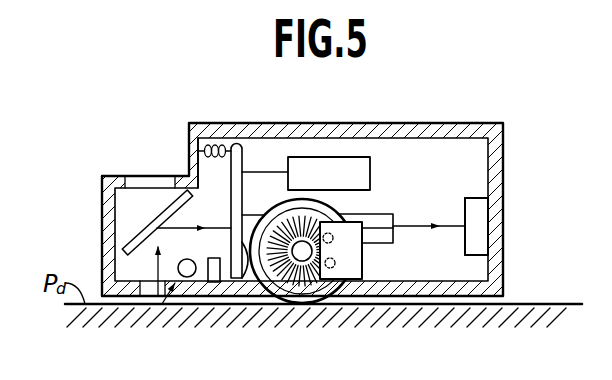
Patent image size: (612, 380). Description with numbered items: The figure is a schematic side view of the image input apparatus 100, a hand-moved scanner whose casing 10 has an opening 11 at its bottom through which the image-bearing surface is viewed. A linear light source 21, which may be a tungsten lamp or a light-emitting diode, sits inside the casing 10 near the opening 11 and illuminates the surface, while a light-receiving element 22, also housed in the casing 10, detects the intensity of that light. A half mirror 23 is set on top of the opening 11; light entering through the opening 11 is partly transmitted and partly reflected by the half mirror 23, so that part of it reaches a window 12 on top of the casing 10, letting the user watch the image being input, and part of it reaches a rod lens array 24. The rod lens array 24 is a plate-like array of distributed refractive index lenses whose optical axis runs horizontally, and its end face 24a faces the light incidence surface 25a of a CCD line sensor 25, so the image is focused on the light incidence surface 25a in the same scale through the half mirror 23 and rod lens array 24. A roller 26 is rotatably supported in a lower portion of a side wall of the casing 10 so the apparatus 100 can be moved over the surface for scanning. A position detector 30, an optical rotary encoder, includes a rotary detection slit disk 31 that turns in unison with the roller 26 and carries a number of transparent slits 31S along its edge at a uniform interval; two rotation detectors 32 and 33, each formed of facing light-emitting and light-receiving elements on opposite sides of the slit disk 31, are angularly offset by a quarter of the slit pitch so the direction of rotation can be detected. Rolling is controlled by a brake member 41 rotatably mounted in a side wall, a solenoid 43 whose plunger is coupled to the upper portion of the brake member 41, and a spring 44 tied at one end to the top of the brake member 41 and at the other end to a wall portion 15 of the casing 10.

The image input apparatus 100 is at (452, 117).
The casing 10 is at (497, 242).
The opening 11 is at (148, 290).
The window 12 is at (163, 180).
The wall portion 15 is at (188, 148).
The linear light source 21 is at (190, 277).
The light-receiving element 22 is at (214, 282).
The half mirror 23 is at (188, 198).
The rod lens array 24 is at (393, 233).
The end face 24a is at (393, 215).
The CCD line sensor 25 is at (480, 220).
The light incidence surface 25a is at (465, 208).
The roller 26 is at (319, 291).
The position detector 30 is at (364, 254).
The rotary detection slit disk 31 is at (302, 267).
The transparent slits 31S is at (278, 268).
The rotation detector 32 is at (333, 265).
The rotation detector 33 is at (333, 240).
The brake member 41 is at (240, 163).
The solenoid 43 is at (370, 168).
The spring 44 is at (223, 147).